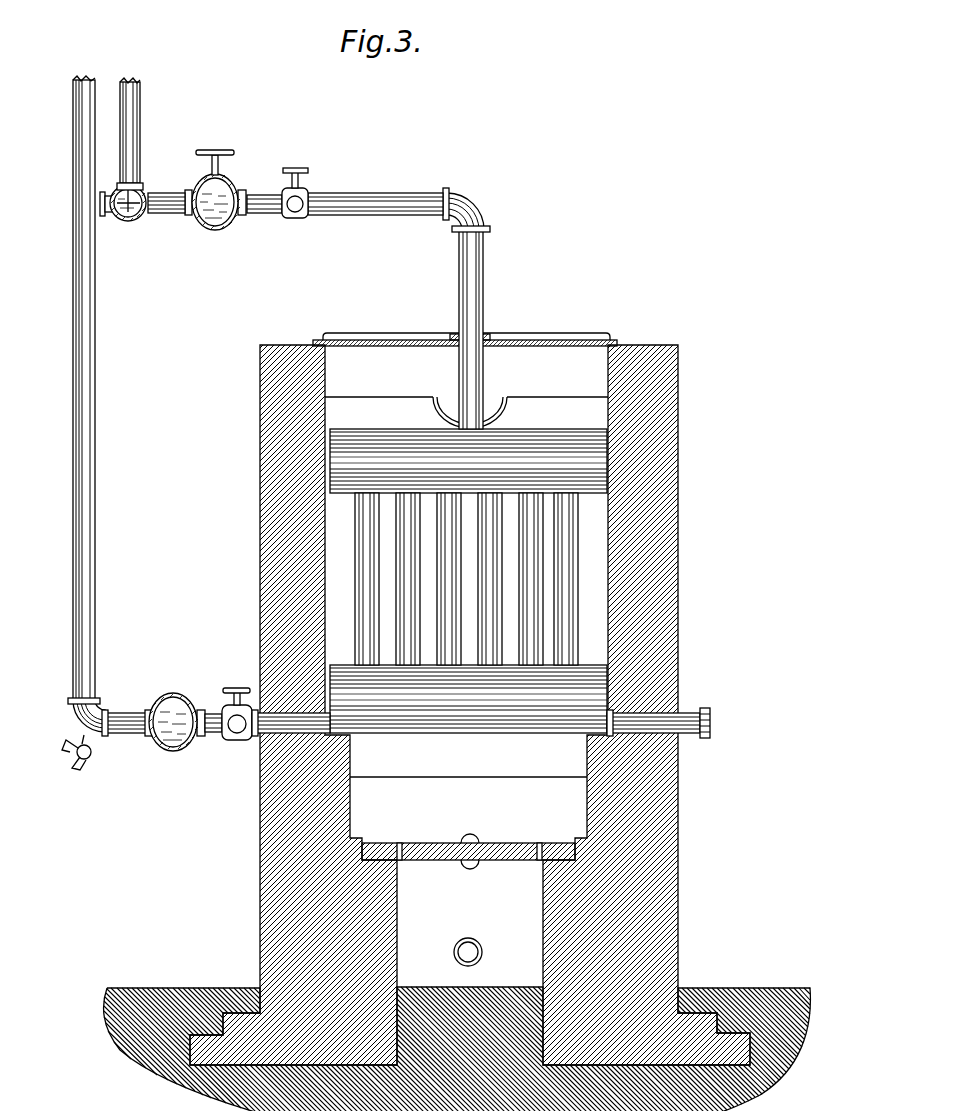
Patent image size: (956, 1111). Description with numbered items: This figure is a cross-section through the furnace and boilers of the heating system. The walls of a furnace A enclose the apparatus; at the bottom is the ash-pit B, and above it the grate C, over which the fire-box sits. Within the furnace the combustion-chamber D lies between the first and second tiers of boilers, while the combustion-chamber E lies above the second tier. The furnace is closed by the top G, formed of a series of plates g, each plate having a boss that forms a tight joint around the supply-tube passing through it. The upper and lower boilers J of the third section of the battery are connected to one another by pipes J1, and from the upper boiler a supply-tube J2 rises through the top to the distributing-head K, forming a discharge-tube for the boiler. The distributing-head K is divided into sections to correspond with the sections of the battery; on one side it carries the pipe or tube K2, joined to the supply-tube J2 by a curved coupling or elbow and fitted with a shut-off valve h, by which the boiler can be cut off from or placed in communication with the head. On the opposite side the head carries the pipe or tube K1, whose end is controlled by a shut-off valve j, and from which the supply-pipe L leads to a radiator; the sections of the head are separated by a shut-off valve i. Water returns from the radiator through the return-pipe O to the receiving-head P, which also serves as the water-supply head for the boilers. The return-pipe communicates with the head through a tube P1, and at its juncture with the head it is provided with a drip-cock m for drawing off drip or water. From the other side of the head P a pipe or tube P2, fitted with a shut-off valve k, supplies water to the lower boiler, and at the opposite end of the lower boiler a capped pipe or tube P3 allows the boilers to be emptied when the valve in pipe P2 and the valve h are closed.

The walls of a furnace A is at (300, 642).
The ash-pit B is at (440, 902).
The grate C is at (472, 843).
The combustion-chamber D is at (566, 600).
The combustion-chamber E is at (553, 381).
The top G is at (507, 338).
The plates g is at (556, 341).
The upper and lower boilers J is at (472, 458).
The pipes J1 is at (408, 603).
The supply-tubes J2 is at (415, 308).
The distributing-head K is at (222, 250).
The pipes or tubes K1 is at (165, 232).
The pipes K2 is at (340, 195).
The supply-pipe L is at (160, 150).
The return-pipe O is at (93, 404).
The receiving-head P is at (184, 688).
The tubes P1 is at (127, 765).
The pipes or tubes P2 is at (232, 767).
The pipe or tube P3 is at (668, 718).
The shut-off valve h is at (277, 182).
The shut-off valve i is at (214, 146).
The shut-off valve j is at (100, 215).
The shut-off valve k is at (218, 686).
The drip-cock m is at (76, 759).